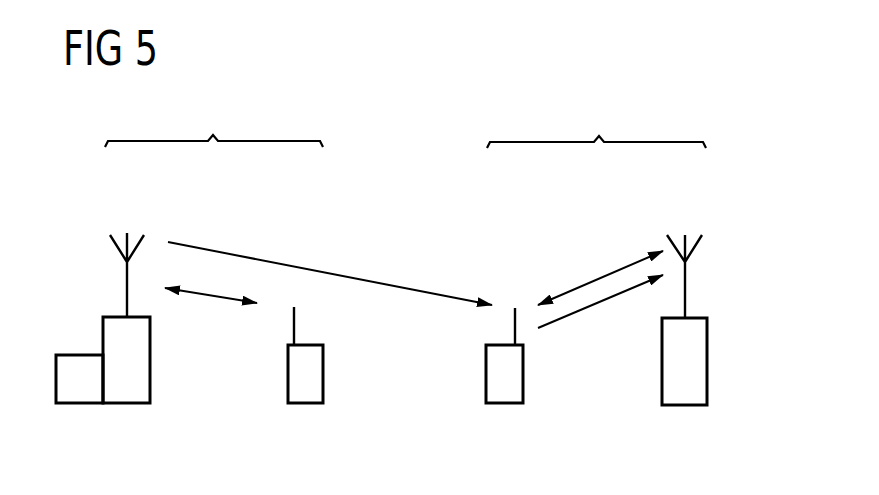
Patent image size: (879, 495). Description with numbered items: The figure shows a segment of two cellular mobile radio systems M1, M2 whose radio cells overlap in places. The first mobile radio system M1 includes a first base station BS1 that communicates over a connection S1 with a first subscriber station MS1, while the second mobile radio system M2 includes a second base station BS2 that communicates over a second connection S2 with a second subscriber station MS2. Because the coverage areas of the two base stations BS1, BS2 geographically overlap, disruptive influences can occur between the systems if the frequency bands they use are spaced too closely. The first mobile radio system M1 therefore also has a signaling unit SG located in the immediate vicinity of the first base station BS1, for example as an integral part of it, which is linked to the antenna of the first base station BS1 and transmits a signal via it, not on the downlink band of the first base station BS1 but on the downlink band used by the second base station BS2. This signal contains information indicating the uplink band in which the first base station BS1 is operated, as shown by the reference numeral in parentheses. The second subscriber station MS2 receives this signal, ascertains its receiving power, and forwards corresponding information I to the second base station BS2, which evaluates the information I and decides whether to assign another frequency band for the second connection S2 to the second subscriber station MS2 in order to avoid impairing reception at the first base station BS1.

The first mobile radio system M1 is at (214, 123).
The second mobile radio system M2 is at (596, 124).
The first base station BS1 is at (128, 403).
The signaling unit SG is at (79, 379).
The connection S1 is at (210, 296).
The first subscriber station MS1 is at (305, 403).
The second subscriber station MS2 is at (505, 403).
The second connection S2 is at (598, 278).
The information I is at (595, 302).
The second base station BS2 is at (685, 405).